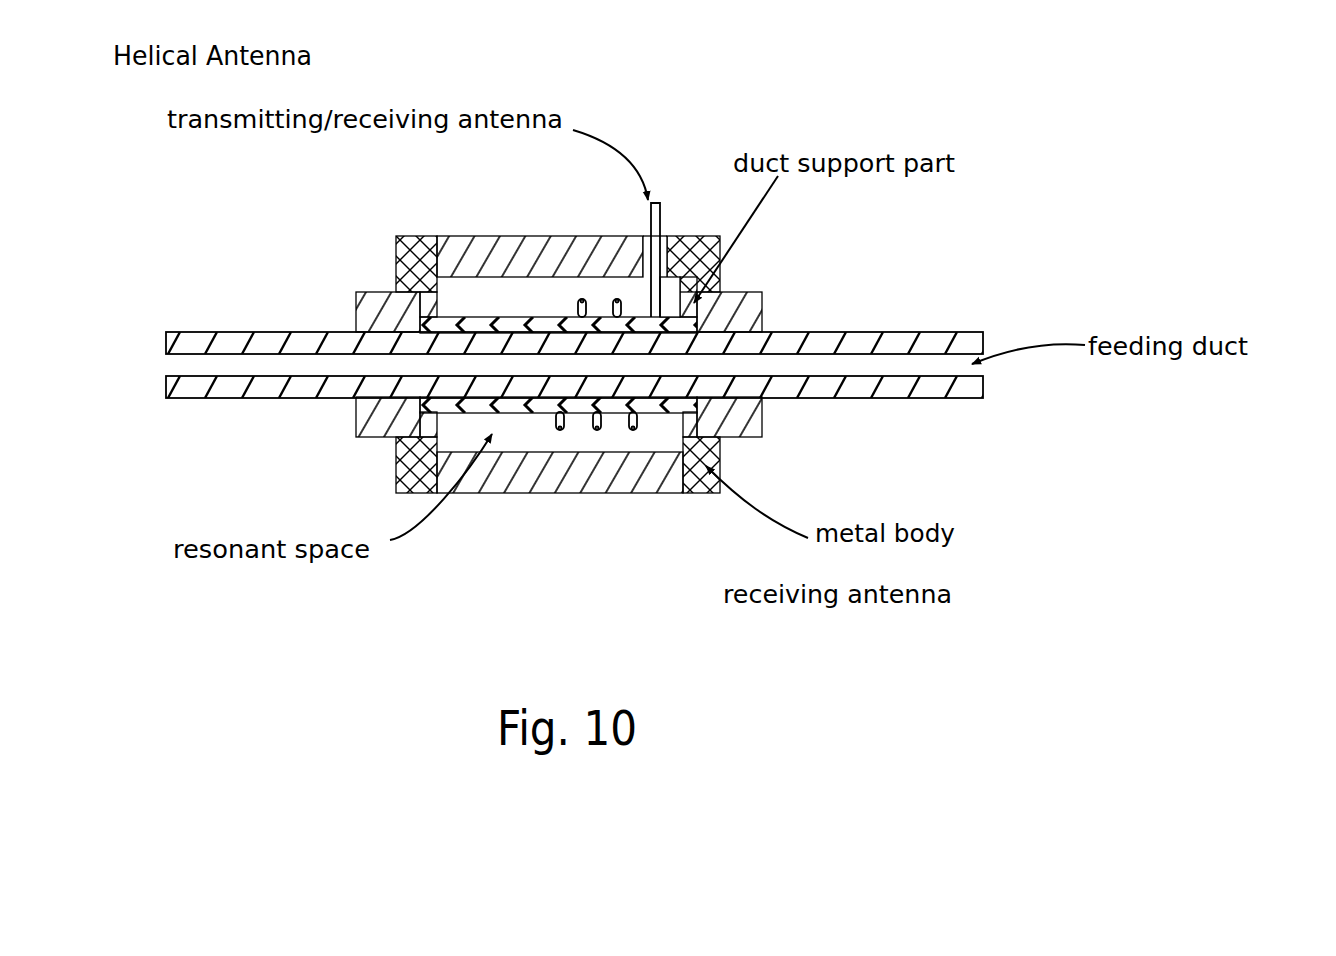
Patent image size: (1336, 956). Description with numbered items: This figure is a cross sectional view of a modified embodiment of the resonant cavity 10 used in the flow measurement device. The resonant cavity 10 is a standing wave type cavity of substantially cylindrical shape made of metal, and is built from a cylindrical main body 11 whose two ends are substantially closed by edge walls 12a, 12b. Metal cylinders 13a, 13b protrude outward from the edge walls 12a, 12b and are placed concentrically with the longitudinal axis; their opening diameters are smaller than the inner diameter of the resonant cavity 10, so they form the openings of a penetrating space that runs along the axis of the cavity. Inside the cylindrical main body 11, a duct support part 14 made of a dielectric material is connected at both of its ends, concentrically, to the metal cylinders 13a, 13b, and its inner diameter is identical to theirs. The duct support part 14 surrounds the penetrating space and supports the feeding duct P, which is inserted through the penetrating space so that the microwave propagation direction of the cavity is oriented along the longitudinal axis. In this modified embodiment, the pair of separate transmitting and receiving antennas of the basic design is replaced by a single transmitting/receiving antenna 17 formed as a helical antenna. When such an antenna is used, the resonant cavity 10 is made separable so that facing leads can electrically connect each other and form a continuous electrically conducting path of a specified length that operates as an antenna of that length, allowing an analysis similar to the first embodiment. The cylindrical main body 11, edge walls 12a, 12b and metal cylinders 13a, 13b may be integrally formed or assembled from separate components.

The resonant cavity 10 is at (443, 566).
The cylindrical main body 11 is at (505, 236).
The edge wall 12a is at (405, 280).
The edge wall 12b is at (722, 276).
The metal cylinder 13a is at (356, 315).
The metal cylinder 13b is at (763, 318).
The duct support part 14 is at (543, 418).
The transmitting/receiving antenna 17 is at (660, 218).
The feeding duct P is at (932, 398).